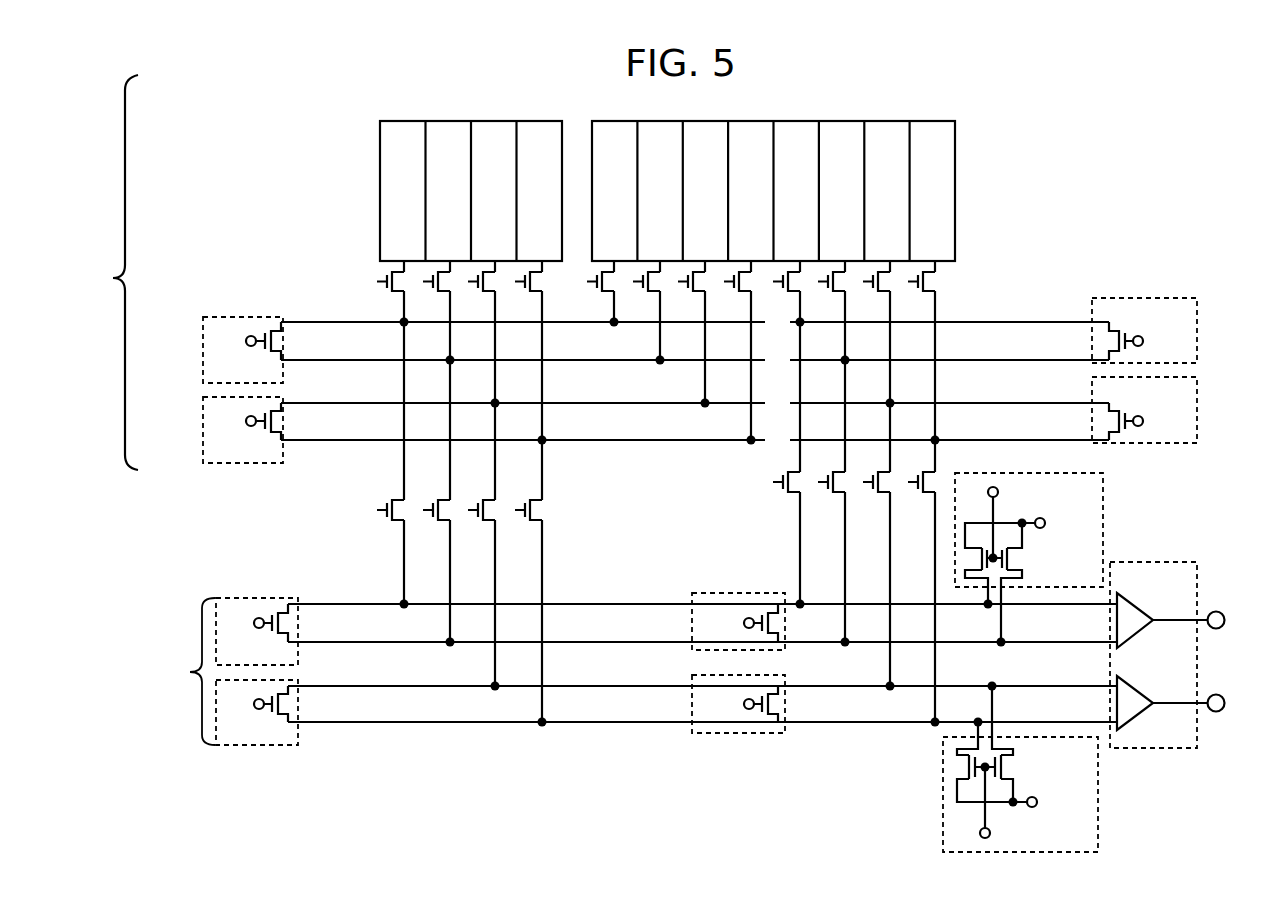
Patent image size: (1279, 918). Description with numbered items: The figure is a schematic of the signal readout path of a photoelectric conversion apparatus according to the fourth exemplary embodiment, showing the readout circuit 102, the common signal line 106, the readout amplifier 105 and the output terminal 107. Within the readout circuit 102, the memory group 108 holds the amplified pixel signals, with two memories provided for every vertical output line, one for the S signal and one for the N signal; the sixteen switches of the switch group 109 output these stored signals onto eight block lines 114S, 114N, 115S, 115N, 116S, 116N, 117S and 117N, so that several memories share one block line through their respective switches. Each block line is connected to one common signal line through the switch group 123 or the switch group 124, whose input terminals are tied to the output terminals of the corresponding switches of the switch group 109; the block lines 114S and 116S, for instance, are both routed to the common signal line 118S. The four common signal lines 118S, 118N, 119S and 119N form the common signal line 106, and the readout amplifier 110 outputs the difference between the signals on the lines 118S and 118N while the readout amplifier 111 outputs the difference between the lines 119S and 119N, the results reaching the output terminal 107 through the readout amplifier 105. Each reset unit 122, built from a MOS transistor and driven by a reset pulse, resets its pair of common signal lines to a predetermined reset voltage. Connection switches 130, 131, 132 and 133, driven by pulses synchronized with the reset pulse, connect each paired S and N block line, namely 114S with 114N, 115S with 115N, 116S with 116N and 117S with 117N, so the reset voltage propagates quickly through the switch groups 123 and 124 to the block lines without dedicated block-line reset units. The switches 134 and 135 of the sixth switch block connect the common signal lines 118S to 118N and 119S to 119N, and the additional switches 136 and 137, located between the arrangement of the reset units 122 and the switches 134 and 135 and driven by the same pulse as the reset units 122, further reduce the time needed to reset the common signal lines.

The readout circuit 102 is at (106, 272).
The readout amplifier 105 is at (1197, 740).
The common signal line 106 is at (182, 671).
The output terminal 107 is at (1227, 630).
The memory group 108 is at (368, 122).
The switch group 109 is at (368, 264).
The readout amplifier 110 is at (1135, 608).
The readout amplifier 111 is at (1147, 712).
The block line 114S is at (318, 322).
The block line 114N is at (318, 360).
The block line 115S is at (332, 403).
The block line 115N is at (332, 440).
The block line 116S is at (982, 322).
The block line 116N is at (1042, 360).
The block line 117S is at (982, 403).
The block line 117N is at (982, 440).
The common signal line 118S is at (577, 604).
The common signal line 118N is at (640, 642).
The common signal line 119S is at (654, 722).
The common signal line 119N is at (577, 722).
The reset unit 122 is at (1103, 487).
The switch group 123 is at (380, 492).
The switch group 124 is at (770, 463).
The connection switch 130 is at (205, 316).
The connection switch 131 is at (208, 464).
The connection switch 132 is at (1197, 330).
The connection switch 133 is at (1197, 412).
The switch 134 is at (237, 597).
The switch 135 is at (237, 746).
The switch 136 is at (735, 593).
The switch 137 is at (735, 734).